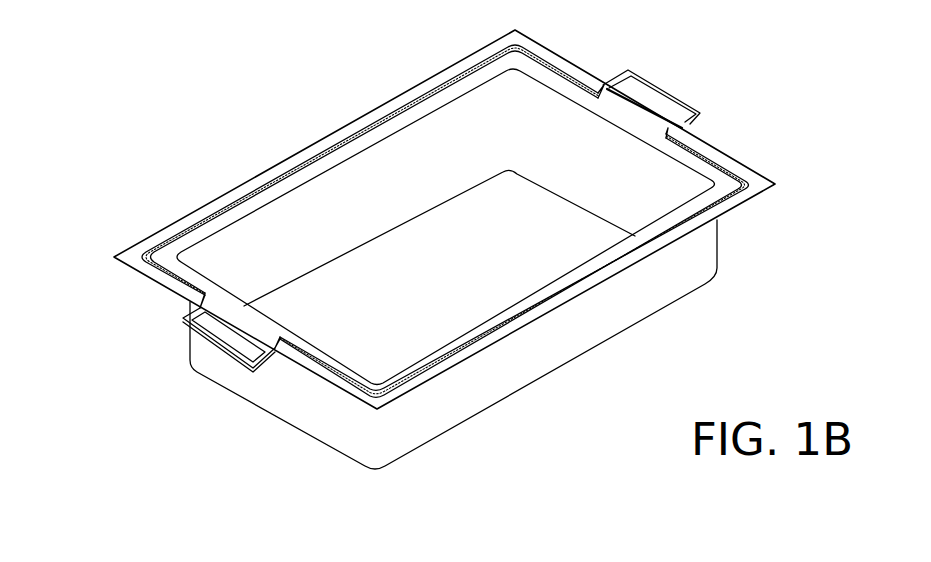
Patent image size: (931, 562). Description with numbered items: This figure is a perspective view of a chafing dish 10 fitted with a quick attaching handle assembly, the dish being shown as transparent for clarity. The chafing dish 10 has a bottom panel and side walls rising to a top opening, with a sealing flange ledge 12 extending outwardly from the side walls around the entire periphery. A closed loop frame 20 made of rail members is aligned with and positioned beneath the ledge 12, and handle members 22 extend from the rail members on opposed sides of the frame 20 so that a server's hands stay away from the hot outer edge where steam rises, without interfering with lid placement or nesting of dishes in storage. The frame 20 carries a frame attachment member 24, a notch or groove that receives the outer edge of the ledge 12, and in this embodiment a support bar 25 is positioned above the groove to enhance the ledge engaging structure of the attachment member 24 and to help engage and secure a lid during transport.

The chafing dish 10 is at (385, 288).
The sealing flange ledge 12 is at (777, 188).
The closed loop frame 20 is at (283, 160).
The handle member 22 is at (693, 112).
The frame attachment member 24 is at (605, 86).
The support bar 25 is at (638, 98).